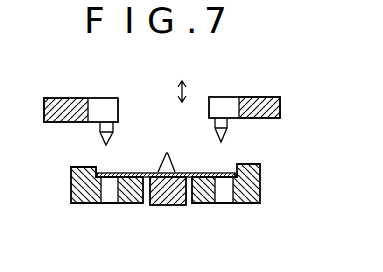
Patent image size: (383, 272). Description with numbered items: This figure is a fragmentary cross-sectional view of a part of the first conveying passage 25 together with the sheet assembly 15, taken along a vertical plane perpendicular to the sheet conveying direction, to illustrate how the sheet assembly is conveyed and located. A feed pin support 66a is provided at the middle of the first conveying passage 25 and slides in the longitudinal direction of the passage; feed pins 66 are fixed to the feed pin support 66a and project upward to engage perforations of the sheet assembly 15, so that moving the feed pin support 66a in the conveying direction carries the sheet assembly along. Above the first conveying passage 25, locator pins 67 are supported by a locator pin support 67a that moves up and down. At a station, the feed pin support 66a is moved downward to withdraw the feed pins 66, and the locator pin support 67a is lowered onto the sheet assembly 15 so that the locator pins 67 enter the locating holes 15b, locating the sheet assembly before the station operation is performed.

The sheet assembly 15 is at (195, 172).
The locating holes 15b is at (108, 172).
The first conveying passage 25 is at (80, 205).
The feed pins 66 is at (167, 153).
The feed pin support 66a is at (165, 206).
The locator pins 67 is at (100, 137).
The locator pin support 67a is at (72, 98).